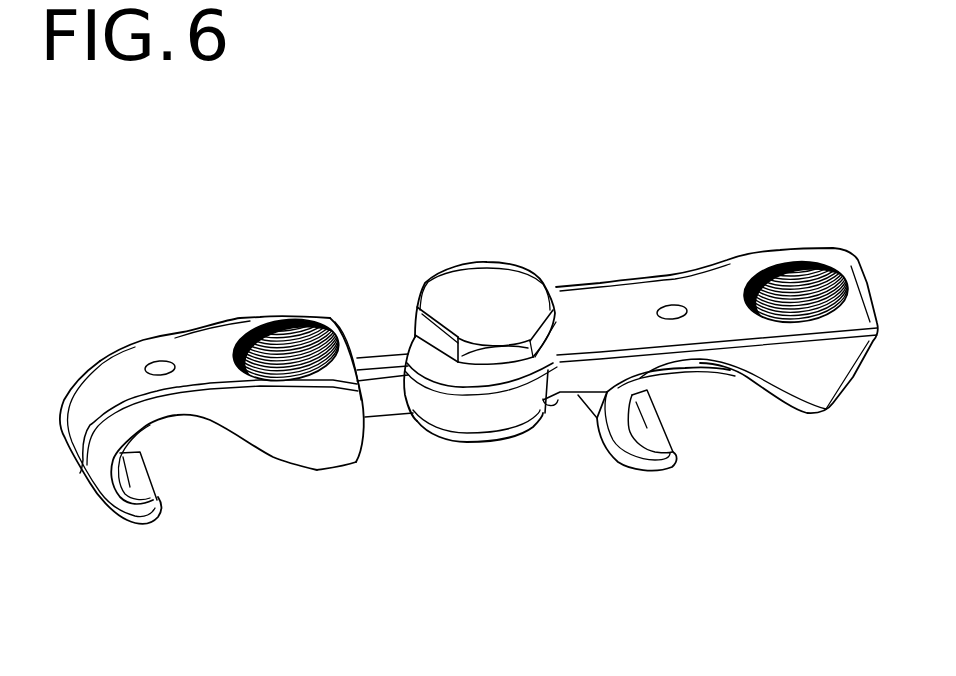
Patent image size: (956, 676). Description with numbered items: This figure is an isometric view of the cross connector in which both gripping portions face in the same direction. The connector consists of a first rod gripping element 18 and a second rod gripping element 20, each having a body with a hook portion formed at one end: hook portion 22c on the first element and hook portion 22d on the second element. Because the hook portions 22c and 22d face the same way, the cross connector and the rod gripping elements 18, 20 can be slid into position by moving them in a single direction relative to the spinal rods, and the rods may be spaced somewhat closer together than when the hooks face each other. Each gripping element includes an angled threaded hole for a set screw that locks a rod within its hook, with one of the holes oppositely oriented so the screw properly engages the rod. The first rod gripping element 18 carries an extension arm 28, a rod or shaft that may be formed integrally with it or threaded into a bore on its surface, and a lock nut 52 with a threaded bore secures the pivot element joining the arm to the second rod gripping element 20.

The first rod gripping element 18 is at (143, 339).
The second rod gripping element 20 is at (784, 246).
The hook portion 22c is at (163, 520).
The hook portion 22d is at (677, 467).
The extension arm 28 is at (397, 422).
The lock nut 52 is at (490, 260).